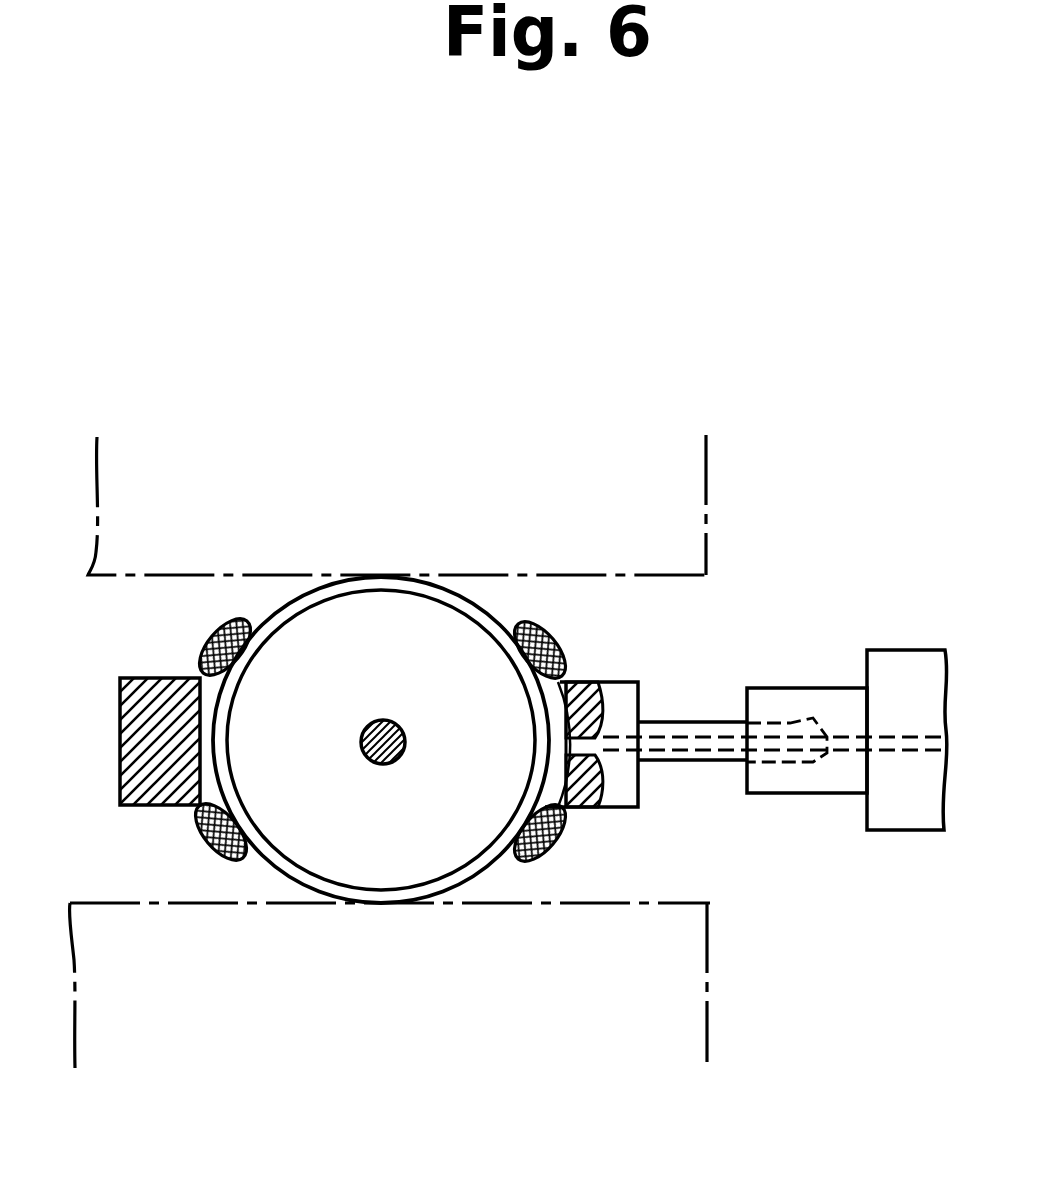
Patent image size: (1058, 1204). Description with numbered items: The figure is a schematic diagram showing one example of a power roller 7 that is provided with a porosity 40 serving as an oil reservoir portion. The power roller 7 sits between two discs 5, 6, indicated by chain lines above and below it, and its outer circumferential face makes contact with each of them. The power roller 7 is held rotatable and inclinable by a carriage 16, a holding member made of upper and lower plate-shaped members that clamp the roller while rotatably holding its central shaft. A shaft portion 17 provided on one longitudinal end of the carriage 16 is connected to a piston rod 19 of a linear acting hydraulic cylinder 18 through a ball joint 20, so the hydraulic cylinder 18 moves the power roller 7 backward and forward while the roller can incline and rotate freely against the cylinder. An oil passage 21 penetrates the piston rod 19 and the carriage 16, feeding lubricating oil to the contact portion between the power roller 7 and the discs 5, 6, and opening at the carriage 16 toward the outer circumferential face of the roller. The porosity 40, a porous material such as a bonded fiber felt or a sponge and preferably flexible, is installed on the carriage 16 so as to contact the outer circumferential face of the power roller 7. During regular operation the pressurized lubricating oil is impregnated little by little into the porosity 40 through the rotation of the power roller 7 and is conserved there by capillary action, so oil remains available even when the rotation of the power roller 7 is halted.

The disc 5 is at (690, 487).
The disc 6 is at (687, 1022).
The power roller 7 is at (378, 613).
The carriage 16 is at (120, 688).
The shaft portion 17 is at (658, 762).
The hydraulic cylinder 18 is at (907, 660).
The piston rod 19 is at (812, 793).
The ball joint 20 is at (808, 720).
The oil passage 21 is at (583, 806).
The porosity 40 is at (218, 626).